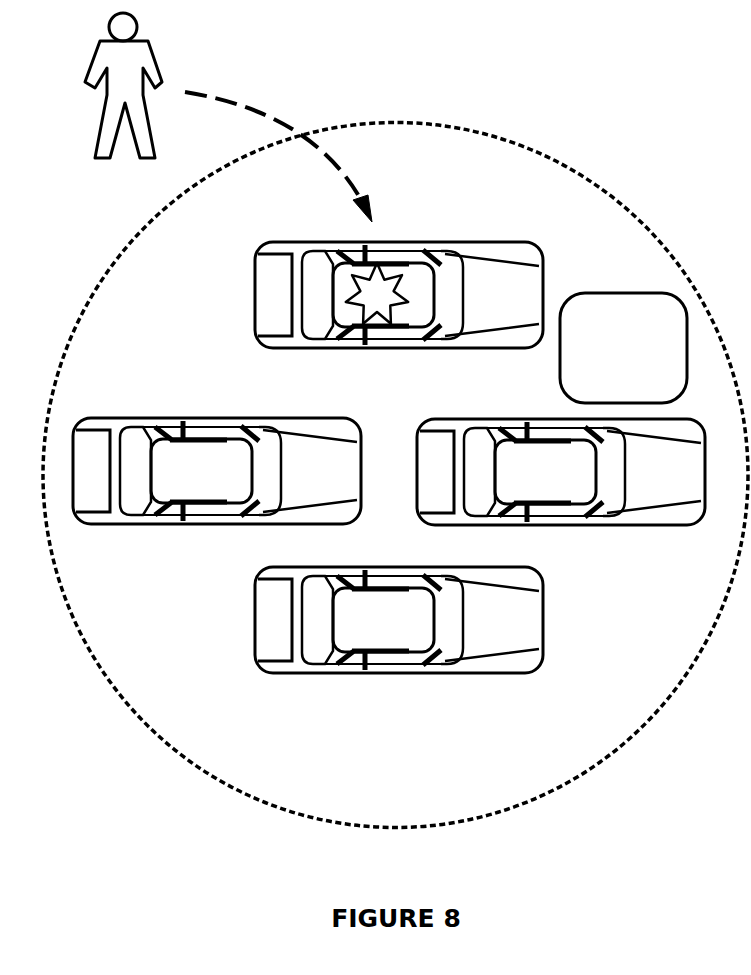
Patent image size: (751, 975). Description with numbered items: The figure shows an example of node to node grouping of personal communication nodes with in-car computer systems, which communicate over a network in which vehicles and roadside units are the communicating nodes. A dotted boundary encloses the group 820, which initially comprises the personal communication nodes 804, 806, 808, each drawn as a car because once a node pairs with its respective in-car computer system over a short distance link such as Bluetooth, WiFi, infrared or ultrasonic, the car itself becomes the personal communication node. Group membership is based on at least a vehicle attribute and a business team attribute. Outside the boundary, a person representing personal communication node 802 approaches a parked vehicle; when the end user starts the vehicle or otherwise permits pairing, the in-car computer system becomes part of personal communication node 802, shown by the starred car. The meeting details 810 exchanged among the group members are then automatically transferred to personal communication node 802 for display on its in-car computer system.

The personal communication node 802 is at (314, 180).
The personal communication node 804 is at (217, 471).
The personal communication node 806 is at (399, 620).
The personal communication node 808 is at (561, 472).
The meeting details 810 is at (604, 388).
The group 820 is at (381, 800).